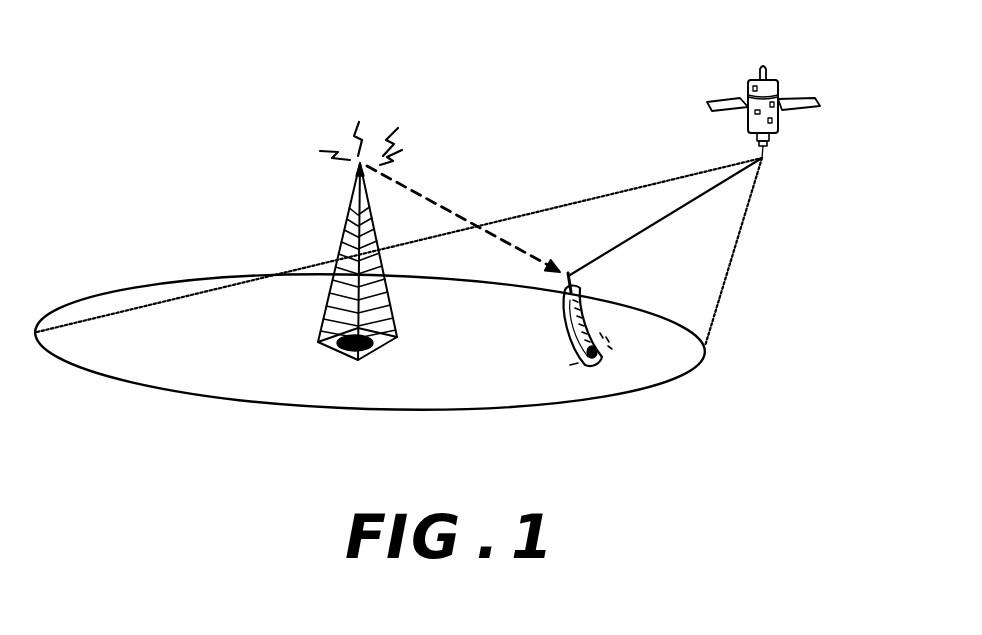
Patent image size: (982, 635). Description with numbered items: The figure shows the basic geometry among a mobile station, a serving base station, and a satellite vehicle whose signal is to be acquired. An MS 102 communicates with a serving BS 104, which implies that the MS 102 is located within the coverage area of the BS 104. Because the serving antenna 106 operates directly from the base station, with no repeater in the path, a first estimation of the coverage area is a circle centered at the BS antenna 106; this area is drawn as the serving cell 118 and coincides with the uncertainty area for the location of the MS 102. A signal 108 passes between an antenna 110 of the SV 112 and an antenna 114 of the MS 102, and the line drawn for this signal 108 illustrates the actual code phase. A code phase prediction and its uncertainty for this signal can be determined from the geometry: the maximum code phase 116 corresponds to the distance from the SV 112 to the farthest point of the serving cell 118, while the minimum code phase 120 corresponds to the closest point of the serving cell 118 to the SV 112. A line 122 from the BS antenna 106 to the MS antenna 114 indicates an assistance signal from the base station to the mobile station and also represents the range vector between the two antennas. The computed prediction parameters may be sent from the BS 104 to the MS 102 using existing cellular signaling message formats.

The mobile station 102 is at (600, 362).
The serving base station 104 is at (340, 207).
The serving antenna 106 is at (376, 127).
The signal 108 is at (660, 227).
The antenna of the satellite vehicle 110 is at (780, 150).
The satellite vehicle 112 is at (800, 92).
The antenna of the mobile station 114 is at (560, 285).
The maximum code phase 116 is at (563, 200).
The serving cell 118 is at (135, 372).
The minimum code phase 120 is at (745, 213).
The line 122 is at (418, 173).